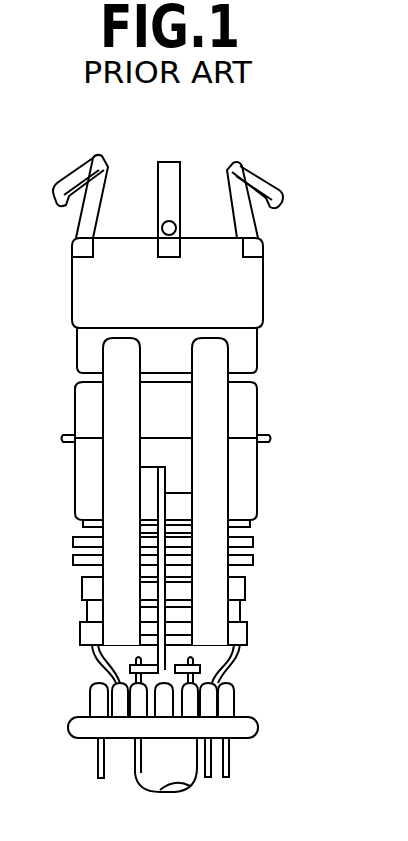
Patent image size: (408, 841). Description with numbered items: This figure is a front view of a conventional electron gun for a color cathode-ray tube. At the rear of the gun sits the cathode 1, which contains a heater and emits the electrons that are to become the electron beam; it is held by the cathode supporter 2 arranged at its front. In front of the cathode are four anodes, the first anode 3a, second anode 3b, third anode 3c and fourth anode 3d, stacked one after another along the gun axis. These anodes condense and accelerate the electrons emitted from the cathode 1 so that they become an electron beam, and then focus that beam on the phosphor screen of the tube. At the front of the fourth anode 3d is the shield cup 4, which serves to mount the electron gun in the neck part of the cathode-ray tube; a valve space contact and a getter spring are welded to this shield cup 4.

The cathode 1 is at (237, 617).
The cathode supporter 2 is at (237, 588).
The first anode 3a is at (250, 558).
The second anode 3b is at (250, 540).
The third anode 3c is at (260, 440).
The fourth anode 3d is at (248, 353).
The shield cup 4 is at (250, 280).